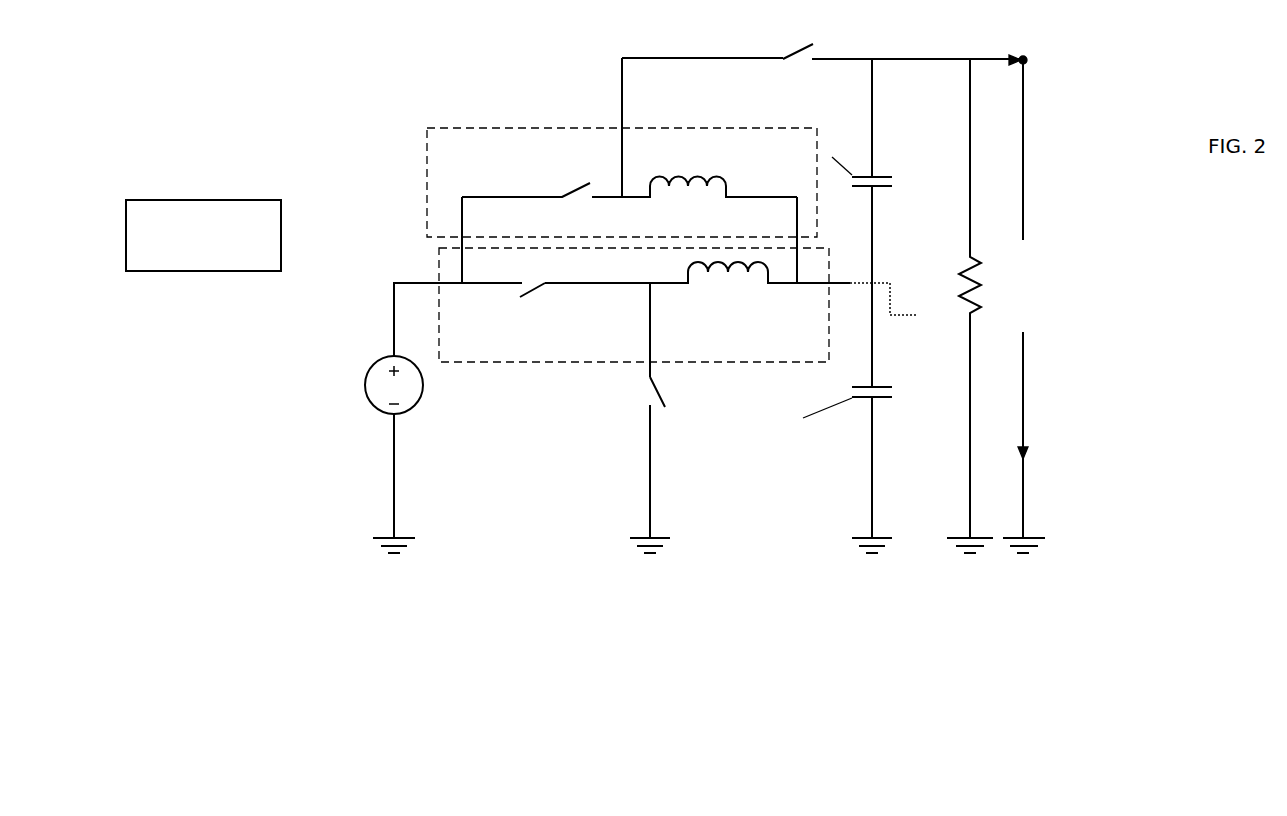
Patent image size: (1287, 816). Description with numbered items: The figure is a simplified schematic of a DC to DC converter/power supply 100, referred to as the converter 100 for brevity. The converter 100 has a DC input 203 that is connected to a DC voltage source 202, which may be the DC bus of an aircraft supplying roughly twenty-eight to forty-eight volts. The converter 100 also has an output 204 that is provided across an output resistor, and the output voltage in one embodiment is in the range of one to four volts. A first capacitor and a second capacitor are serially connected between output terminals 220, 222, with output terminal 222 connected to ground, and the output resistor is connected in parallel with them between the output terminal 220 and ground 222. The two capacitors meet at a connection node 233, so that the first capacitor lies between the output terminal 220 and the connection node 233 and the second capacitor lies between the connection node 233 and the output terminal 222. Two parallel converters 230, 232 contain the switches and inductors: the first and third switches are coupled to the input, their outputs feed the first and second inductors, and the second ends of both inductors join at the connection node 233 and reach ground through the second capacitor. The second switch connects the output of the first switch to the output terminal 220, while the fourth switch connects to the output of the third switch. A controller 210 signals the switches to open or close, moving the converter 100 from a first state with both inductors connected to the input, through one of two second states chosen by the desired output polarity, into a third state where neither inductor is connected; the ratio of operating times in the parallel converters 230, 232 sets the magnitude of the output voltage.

The DC to DC converter/power supply 100 is at (340, 122).
The DC voltage source 202 is at (367, 370).
The DC input 203 is at (397, 325).
The output 204 is at (1102, 175).
The controller 210 is at (222, 248).
The output terminal 220 is at (1032, 53).
The output terminal 222 is at (1037, 488).
The parallel converter 230 is at (498, 123).
The parallel converter 232 is at (543, 368).
The connection node 233 is at (908, 309).